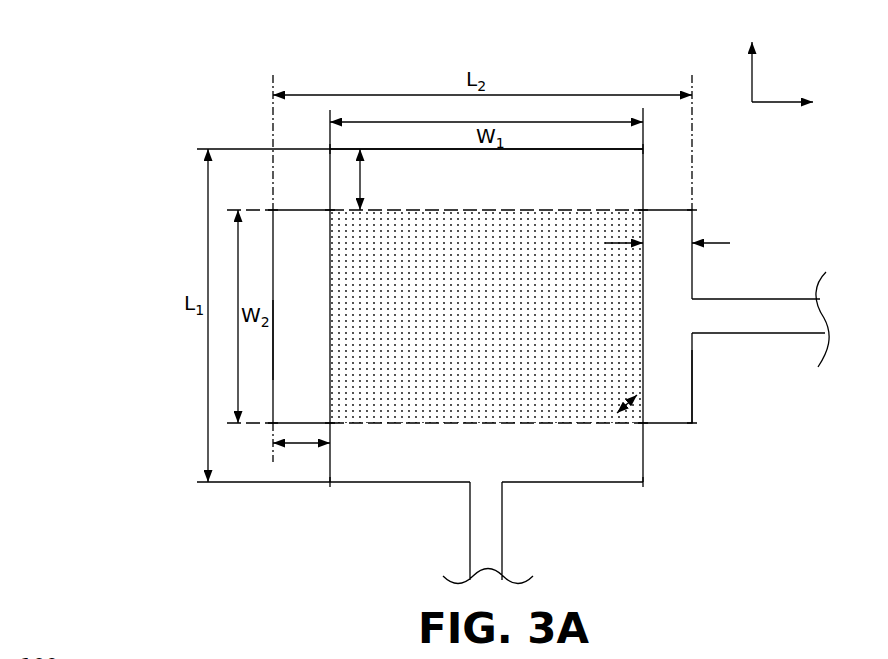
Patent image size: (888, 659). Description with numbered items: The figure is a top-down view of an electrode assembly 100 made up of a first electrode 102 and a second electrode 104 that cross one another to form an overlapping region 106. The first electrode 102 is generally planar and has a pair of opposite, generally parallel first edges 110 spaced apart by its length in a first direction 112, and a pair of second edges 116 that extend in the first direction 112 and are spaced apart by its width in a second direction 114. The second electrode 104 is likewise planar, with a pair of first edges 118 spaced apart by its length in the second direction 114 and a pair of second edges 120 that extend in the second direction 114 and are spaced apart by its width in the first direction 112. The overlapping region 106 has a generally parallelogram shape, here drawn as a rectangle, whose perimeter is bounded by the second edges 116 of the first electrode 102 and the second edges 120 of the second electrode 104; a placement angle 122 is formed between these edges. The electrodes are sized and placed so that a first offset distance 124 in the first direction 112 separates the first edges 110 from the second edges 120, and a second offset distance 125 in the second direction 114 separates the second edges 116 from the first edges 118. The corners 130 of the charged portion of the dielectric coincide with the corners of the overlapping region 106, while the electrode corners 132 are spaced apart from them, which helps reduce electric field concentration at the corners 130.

The electrode assembly 100 is at (100, 150).
The first electrode 102 is at (362, 148).
The second electrode 104 is at (272, 262).
The overlapping region 106 is at (506, 332).
The first edges of the first electrode 110 is at (546, 146).
The first direction 112 is at (752, 59).
The second direction 114 is at (805, 103).
The second edges of the first electrode 116 is at (648, 378).
The first edges of the second electrode 118 is at (270, 359).
The second edges of the second electrode 120 is at (617, 206).
The placement angle 122 is at (625, 425).
The first offset distance 124 is at (362, 180).
The second offset distance 125 is at (700, 243).
The corners of the charged portion of the dielectric material 130 is at (327, 208).
The electrode corners 132 is at (268, 208).